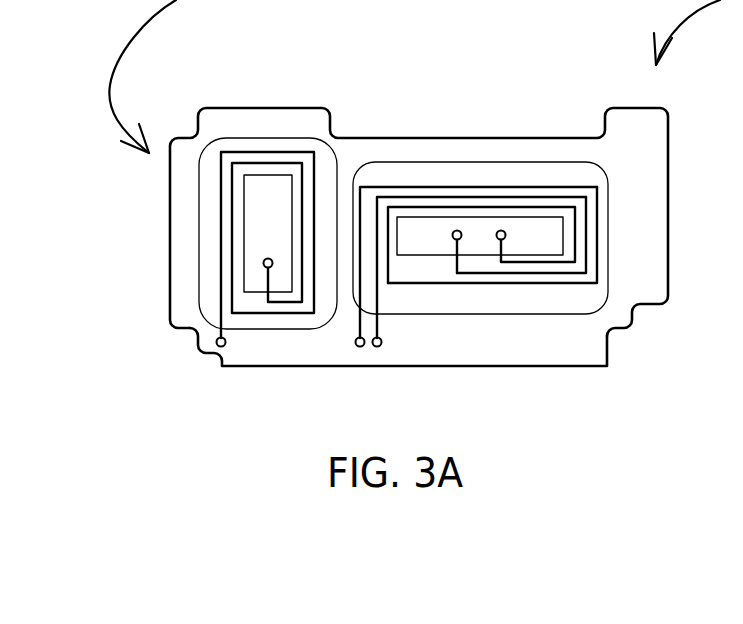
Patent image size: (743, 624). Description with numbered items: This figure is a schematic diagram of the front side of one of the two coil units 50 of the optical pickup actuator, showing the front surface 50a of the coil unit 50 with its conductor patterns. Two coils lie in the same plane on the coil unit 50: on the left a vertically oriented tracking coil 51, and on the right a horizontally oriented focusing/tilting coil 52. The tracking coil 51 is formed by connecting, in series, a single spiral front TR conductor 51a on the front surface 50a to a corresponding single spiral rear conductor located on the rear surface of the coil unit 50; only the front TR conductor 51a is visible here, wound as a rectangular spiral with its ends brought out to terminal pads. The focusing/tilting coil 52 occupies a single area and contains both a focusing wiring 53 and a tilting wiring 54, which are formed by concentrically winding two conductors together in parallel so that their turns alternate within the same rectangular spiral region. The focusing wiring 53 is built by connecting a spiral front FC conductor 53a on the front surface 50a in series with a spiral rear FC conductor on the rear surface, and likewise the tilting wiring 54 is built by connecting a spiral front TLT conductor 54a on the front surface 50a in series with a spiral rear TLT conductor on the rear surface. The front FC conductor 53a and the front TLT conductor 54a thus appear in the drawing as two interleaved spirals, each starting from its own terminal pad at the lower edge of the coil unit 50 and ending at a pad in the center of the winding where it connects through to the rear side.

The coil unit 50 is at (431, 266).
The front surface 50a is at (254, 355).
The tracking coil 51 is at (212, 242).
The front TR conductor 51a is at (222, 268).
The focusing/tilting coil 52 is at (535, 227).
The focusing wiring 53 is at (546, 213).
The front FC conductor 53a is at (585, 204).
The tilting wiring 54 is at (537, 197).
The front TLT conductor 54a is at (597, 255).